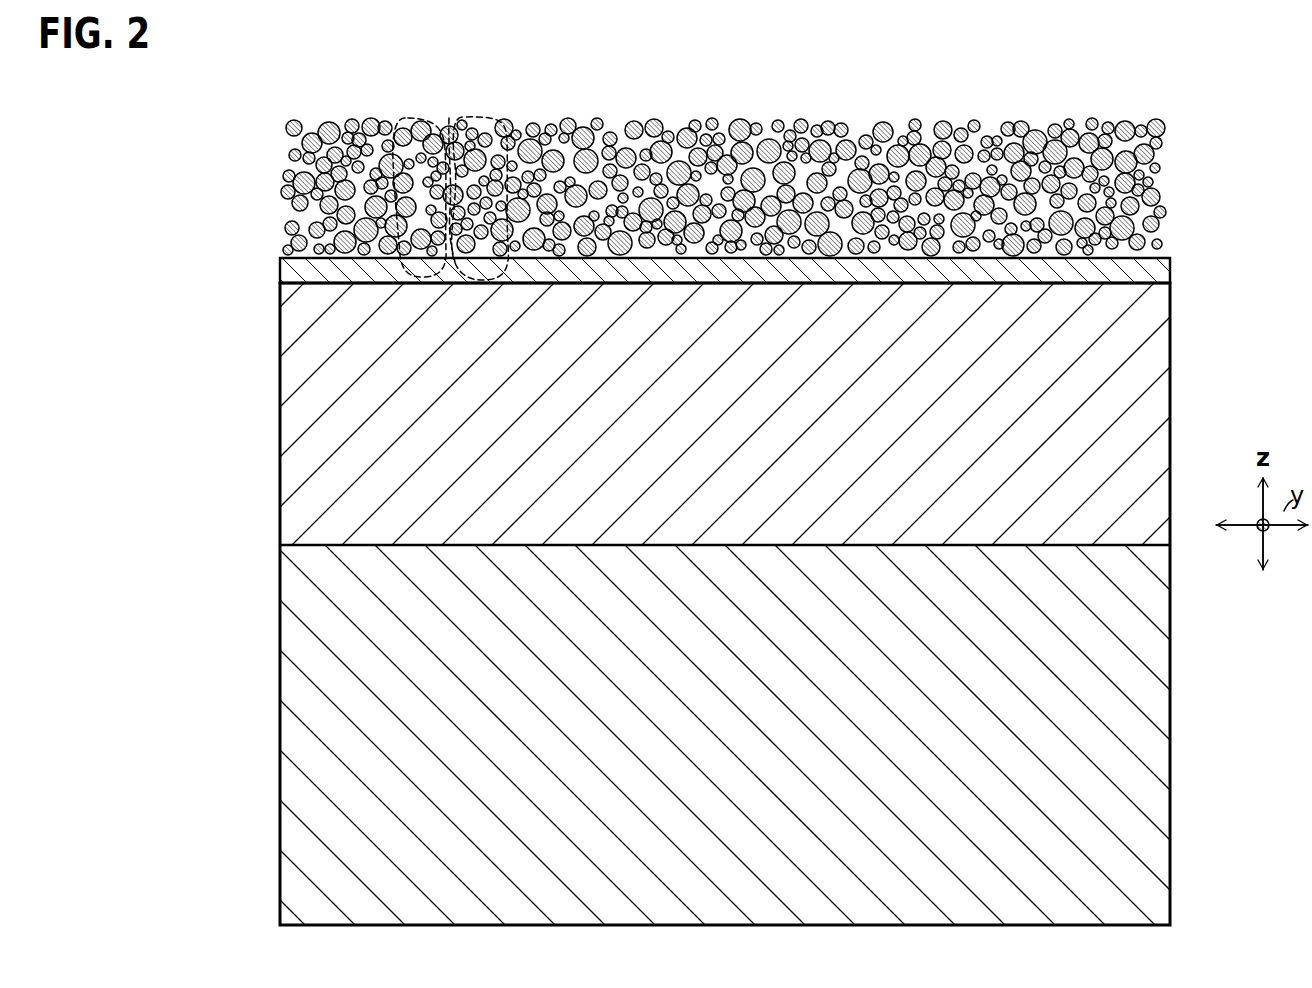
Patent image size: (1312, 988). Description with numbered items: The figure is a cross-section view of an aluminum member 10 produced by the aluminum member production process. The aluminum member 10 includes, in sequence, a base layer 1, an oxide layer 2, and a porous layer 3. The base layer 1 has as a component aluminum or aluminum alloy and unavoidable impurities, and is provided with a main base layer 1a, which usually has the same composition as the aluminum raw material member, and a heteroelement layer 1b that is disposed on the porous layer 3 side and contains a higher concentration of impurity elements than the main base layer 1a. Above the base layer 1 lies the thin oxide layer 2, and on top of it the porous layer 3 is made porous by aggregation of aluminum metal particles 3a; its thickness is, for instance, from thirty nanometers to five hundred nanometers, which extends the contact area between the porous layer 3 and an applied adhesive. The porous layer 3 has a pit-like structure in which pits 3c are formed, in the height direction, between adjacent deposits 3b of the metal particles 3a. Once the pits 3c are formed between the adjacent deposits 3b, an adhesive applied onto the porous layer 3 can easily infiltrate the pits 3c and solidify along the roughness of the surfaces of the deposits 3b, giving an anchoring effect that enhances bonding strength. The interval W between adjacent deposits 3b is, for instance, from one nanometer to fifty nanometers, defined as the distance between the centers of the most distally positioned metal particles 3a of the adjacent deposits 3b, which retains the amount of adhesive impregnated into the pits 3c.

The aluminum member 10 is at (1046, 76).
The base layer 1 is at (210, 373).
The main base layer 1a is at (280, 705).
The heteroelement layer 1b is at (280, 404).
The oxide layer 2 is at (280, 268).
The porous layer 3 is at (272, 113).
The metal particles 3a is at (641, 122).
The deposits 3b is at (408, 119).
The pits 3c is at (433, 116).